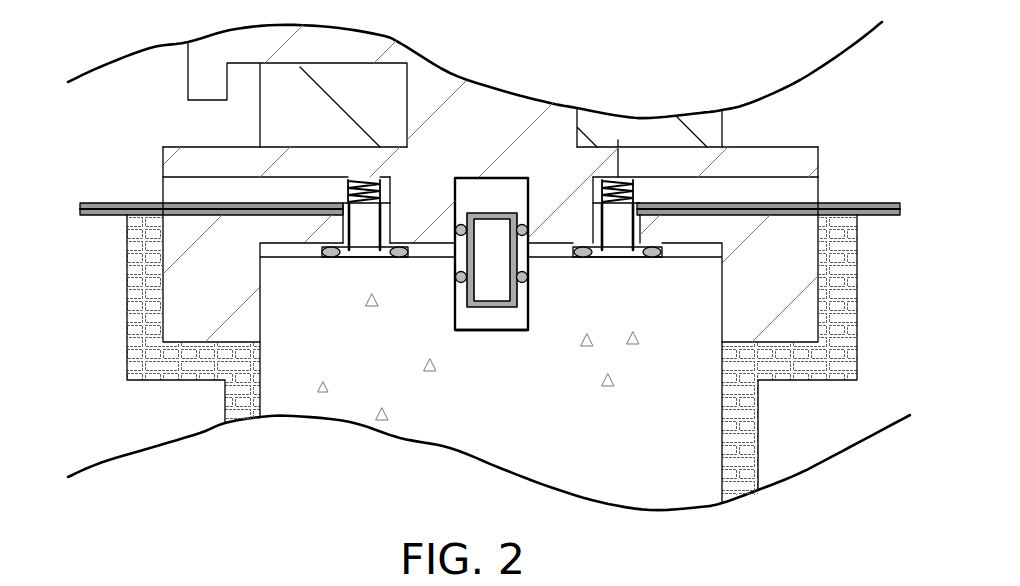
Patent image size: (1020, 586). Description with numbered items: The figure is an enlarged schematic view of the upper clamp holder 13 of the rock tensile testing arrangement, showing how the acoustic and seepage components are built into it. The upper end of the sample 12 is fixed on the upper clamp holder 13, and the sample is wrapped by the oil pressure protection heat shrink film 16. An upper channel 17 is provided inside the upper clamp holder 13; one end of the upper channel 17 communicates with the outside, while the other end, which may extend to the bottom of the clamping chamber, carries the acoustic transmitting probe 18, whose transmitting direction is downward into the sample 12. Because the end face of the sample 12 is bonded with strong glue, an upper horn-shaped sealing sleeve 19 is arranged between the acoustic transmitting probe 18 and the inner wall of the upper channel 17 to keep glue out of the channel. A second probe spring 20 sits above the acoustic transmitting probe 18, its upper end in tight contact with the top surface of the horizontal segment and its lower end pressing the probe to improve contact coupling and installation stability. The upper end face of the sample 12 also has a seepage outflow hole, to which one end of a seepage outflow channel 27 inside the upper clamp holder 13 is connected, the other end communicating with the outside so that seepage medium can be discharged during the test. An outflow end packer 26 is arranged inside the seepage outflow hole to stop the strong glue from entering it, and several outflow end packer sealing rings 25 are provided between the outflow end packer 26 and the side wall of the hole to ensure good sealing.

The sample 12 is at (447, 413).
The upper clamp holder 13 is at (193, 293).
The oil pressure protection heat shrink film 16 is at (148, 345).
The upper channel 17 is at (193, 193).
The acoustic transmitting probe 18 is at (368, 235).
The upper horn-shaped sealing sleeve 19 is at (400, 254).
The second probe spring 20 is at (388, 183).
The outflow end packer sealing ring 25 is at (526, 279).
The outflow end packer 26 is at (490, 282).
The seepage outflow channel 27 is at (495, 318).